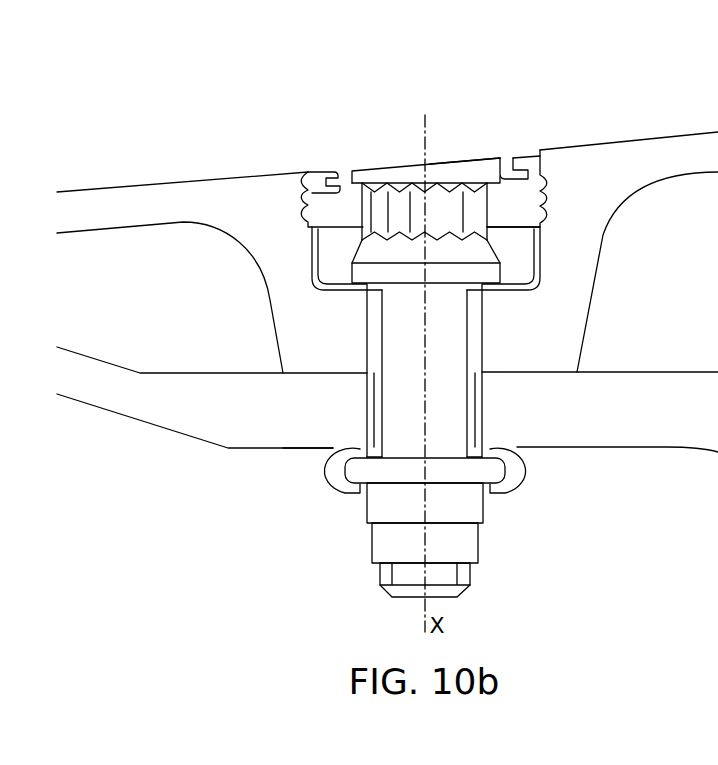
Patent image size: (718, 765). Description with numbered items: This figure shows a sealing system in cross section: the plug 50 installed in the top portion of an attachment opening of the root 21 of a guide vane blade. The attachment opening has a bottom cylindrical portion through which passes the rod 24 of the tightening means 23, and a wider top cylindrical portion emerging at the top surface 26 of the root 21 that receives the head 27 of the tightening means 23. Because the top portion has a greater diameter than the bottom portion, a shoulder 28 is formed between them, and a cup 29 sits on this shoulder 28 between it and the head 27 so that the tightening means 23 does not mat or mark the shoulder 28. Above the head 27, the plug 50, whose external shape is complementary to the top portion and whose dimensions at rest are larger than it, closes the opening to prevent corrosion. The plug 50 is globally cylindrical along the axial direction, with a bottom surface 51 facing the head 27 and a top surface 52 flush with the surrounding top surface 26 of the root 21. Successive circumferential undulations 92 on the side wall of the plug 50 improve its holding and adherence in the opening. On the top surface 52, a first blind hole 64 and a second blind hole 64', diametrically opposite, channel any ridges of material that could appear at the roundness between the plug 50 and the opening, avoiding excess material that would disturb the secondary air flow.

The root 21 is at (645, 166).
The tightening means 23 is at (485, 429).
The rod 24 is at (405, 409).
The top surface 26 is at (140, 184).
The head 27 is at (408, 215).
The shoulder 28 is at (321, 290).
The cup 29 is at (532, 284).
The plug 50 is at (412, 172).
The bottom surface 51 is at (505, 228).
The top surface 52 is at (467, 158).
The first blind hole 64 is at (320, 130).
The second blind hole 64' is at (518, 114).
The undulations 92 is at (303, 207).